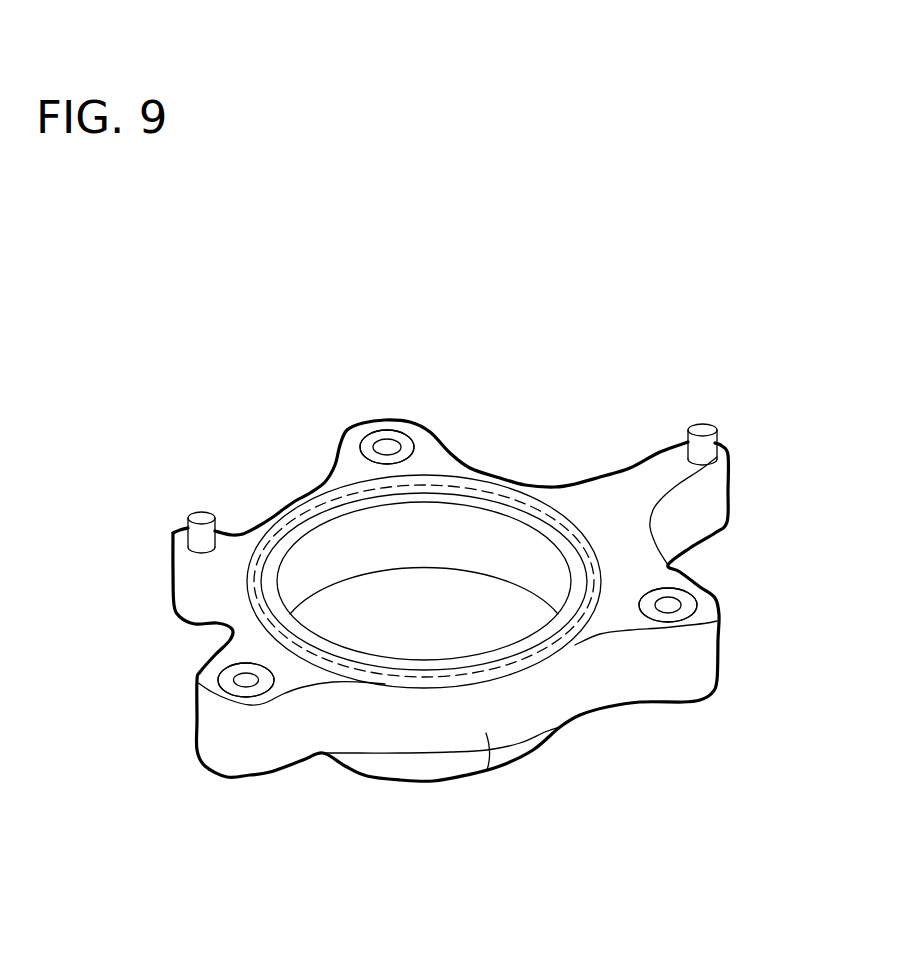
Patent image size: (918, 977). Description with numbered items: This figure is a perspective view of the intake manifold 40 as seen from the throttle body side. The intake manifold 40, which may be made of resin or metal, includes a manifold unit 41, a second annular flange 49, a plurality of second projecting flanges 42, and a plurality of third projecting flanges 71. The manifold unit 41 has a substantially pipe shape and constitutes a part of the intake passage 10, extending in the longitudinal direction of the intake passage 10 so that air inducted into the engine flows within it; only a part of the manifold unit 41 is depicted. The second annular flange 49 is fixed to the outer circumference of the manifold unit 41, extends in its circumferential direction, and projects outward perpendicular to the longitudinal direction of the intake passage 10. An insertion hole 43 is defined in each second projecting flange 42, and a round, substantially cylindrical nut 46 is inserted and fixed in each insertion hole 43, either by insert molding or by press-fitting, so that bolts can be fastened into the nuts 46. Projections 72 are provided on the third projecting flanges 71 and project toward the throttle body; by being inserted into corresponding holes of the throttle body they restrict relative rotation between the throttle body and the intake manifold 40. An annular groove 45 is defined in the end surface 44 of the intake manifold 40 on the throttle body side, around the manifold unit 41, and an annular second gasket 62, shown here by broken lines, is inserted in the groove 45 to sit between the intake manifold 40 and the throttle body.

The intake passage 10 is at (505, 543).
The intake manifold 40 is at (586, 762).
The manifold unit 41 is at (390, 767).
The second projecting flange 42 is at (360, 430).
The insertion hole 43 is at (393, 440).
The end surface 44 is at (289, 512).
The groove 45 is at (319, 520).
The nut 46 is at (377, 437).
The second annular flange 49 is at (487, 735).
The second gasket 62 is at (270, 540).
The third projecting flange 71 is at (185, 582).
The projection 72 is at (202, 517).